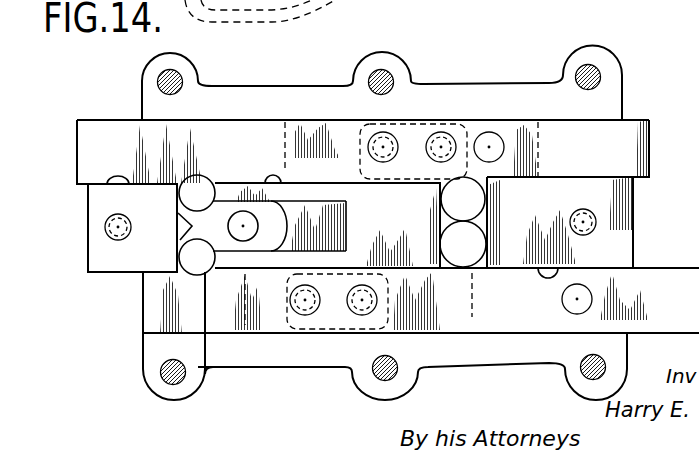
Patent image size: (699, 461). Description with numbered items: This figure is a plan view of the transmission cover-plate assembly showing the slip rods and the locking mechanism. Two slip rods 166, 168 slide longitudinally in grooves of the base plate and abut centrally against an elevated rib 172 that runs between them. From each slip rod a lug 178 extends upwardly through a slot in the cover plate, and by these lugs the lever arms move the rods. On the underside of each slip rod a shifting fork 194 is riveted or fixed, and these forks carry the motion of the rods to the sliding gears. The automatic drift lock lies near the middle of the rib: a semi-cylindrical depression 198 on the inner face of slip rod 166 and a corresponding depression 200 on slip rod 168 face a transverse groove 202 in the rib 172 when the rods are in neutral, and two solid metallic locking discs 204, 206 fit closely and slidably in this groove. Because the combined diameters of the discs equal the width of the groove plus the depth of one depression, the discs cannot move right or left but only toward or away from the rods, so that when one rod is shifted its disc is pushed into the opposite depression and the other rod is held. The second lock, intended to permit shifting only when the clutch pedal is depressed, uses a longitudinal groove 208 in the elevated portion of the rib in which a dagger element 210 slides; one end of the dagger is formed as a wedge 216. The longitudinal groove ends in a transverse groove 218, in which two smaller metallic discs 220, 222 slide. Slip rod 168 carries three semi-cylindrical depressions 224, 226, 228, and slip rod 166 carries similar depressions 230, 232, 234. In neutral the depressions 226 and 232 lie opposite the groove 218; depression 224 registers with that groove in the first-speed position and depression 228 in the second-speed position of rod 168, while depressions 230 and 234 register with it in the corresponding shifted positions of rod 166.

The slip rod 166 is at (655, 327).
The slip rod 168 is at (620, 128).
The elevated rib 172 is at (95, 252).
The lug 178 is at (490, 146).
The shifting fork 194 is at (412, 129).
The semi-cylindrical depression 198 is at (550, 279).
The semi-cylindrical depression 200 is at (488, 177).
The transverse groove 202 is at (482, 220).
The locking disc 204 is at (475, 198).
The locking disc 206 is at (466, 251).
The longitudinal groove 208 is at (316, 216).
The dagger element 210 is at (277, 236).
The wedge 216 is at (190, 223).
The transverse groove 218 is at (178, 213).
The metallic disc 220 is at (199, 180).
The metallic disc 222 is at (190, 259).
The semi-cylindrical depression 224 is at (119, 177).
The semi-cylindrical depression 226 is at (210, 172).
The semi-cylindrical depression 228 is at (276, 178).
The depression 230 is at (206, 369).
The depression 232 is at (279, 272).
The depression 234 is at (328, 272).